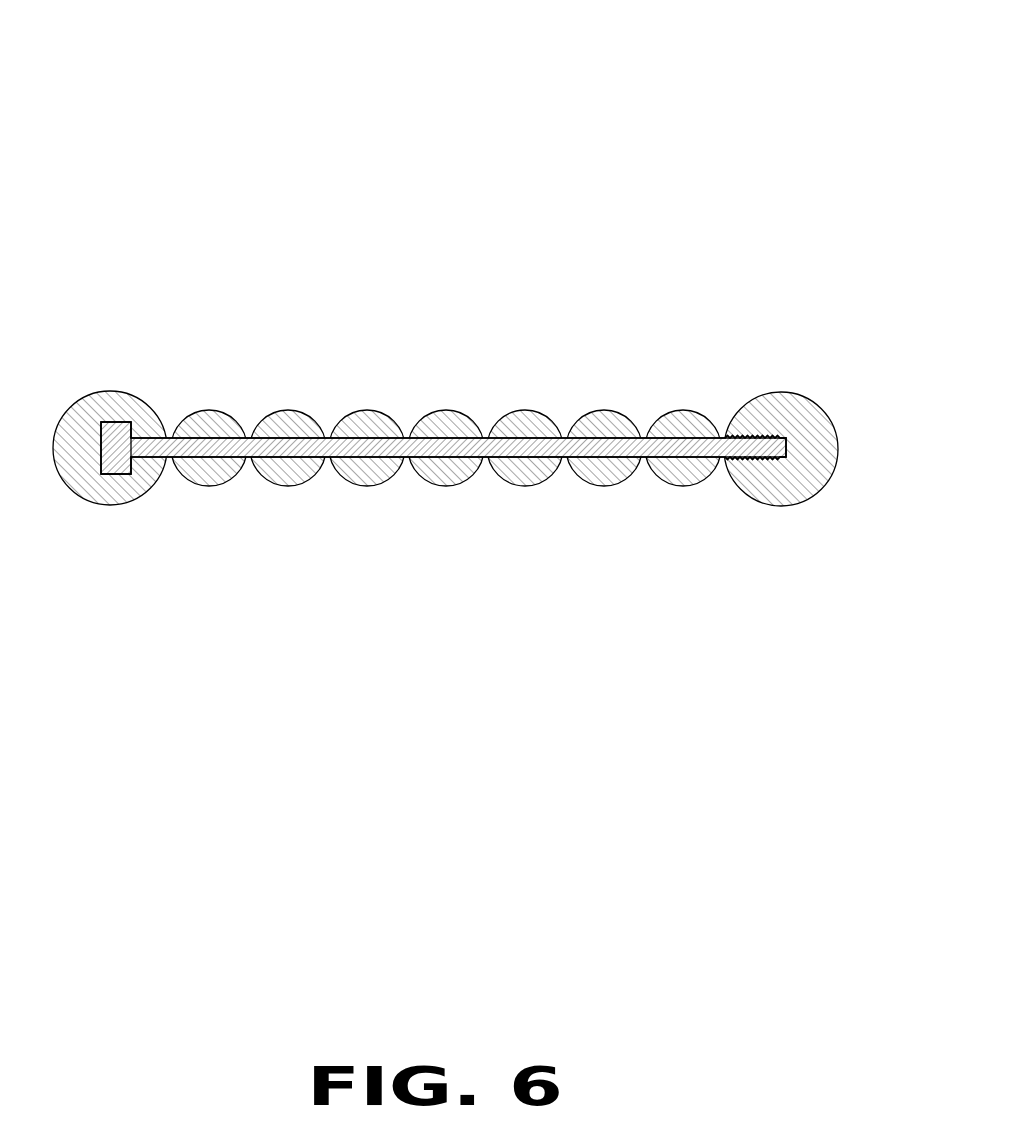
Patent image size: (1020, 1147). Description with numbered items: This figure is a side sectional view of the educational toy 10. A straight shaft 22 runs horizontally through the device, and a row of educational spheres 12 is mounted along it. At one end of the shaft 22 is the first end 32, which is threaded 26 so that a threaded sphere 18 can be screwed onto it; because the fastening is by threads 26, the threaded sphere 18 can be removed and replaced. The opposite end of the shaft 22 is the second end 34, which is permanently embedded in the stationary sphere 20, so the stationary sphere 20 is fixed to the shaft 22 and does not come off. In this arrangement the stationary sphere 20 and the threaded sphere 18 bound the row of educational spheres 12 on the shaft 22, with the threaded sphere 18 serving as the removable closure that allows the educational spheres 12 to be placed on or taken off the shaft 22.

The educational toy 10 is at (590, 118).
The educational spheres 12 is at (210, 412).
The threaded sphere 18 is at (768, 420).
The stationary sphere 20 is at (122, 485).
The shaft 22 is at (437, 448).
The threads 26 is at (760, 450).
The first end 32 is at (773, 448).
The second end 34 is at (124, 430).